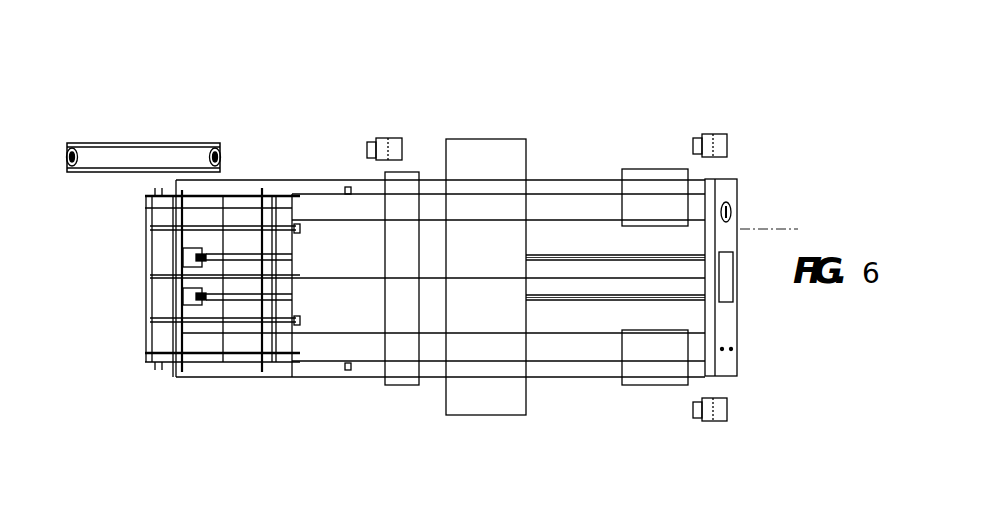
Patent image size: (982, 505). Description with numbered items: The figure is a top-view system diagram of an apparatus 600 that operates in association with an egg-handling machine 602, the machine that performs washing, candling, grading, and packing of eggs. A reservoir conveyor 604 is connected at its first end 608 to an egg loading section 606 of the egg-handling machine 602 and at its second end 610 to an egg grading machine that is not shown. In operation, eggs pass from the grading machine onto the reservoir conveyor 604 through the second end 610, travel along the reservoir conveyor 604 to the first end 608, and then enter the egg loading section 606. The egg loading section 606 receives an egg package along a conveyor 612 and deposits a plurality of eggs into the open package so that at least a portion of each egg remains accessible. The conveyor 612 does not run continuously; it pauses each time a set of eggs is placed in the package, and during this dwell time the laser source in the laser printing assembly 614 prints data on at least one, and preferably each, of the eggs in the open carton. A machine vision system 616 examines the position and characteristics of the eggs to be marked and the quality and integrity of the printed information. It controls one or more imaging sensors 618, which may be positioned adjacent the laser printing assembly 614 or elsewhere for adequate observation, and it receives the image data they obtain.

The apparatus 600 is at (470, 256).
The egg-handling machine 602 is at (600, 167).
The reservoir conveyor 604 is at (193, 325).
The egg loading section 606 is at (475, 139).
The first end 608 is at (293, 250).
The second end 610 is at (160, 250).
The conveyor 612 is at (578, 317).
The laser printing assembly 614 is at (397, 343).
The machine vision system 616 is at (747, 222).
The imaging sensors 618 is at (727, 132).